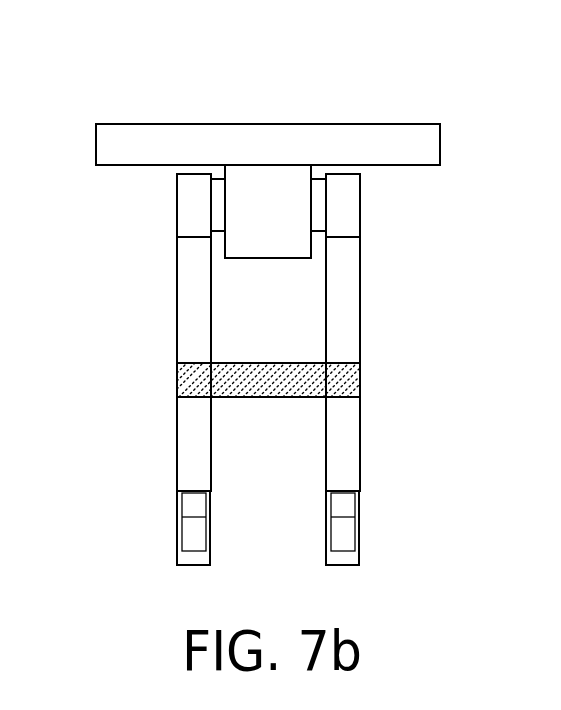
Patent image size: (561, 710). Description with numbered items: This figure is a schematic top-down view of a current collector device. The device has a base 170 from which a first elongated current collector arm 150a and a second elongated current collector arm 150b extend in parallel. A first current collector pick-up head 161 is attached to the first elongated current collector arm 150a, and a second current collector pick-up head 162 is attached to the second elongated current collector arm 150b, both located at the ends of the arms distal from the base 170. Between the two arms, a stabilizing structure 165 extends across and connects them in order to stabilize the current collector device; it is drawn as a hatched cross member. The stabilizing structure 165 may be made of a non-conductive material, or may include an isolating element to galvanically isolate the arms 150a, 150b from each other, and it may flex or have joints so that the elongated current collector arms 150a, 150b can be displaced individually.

The base 170 is at (271, 142).
The first elongated current collector arm 150a is at (195, 326).
The second elongated current collector arm 150b is at (342, 327).
The stabilizing structure 165 is at (272, 373).
The first current collector pick-up head 161 is at (192, 558).
The second current collector pick-up head 162 is at (345, 558).